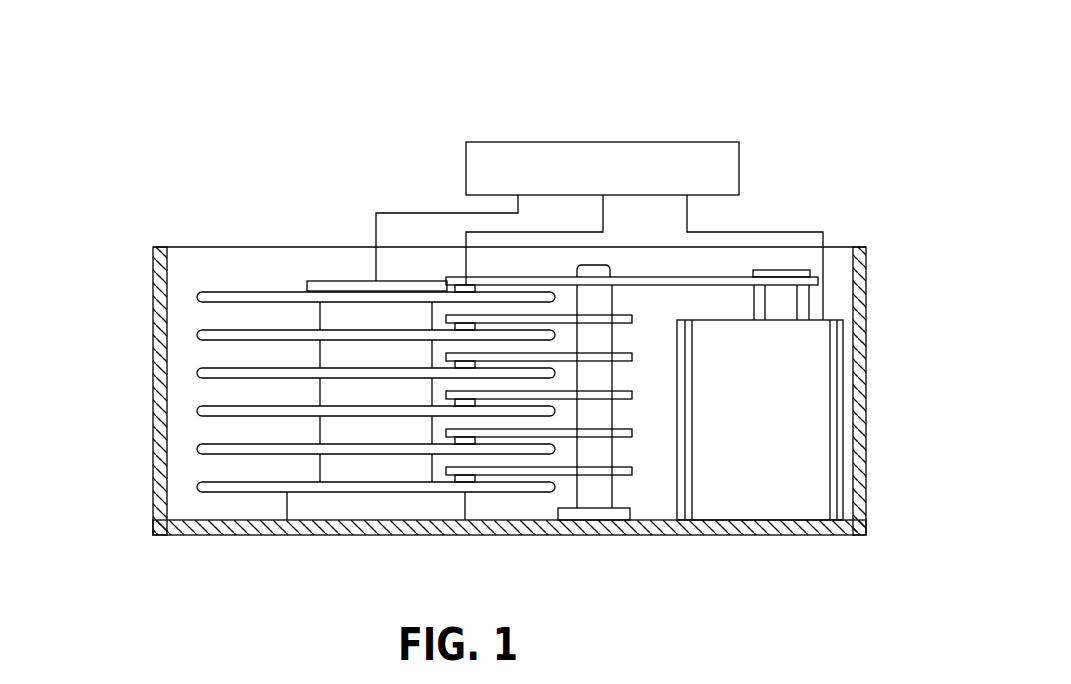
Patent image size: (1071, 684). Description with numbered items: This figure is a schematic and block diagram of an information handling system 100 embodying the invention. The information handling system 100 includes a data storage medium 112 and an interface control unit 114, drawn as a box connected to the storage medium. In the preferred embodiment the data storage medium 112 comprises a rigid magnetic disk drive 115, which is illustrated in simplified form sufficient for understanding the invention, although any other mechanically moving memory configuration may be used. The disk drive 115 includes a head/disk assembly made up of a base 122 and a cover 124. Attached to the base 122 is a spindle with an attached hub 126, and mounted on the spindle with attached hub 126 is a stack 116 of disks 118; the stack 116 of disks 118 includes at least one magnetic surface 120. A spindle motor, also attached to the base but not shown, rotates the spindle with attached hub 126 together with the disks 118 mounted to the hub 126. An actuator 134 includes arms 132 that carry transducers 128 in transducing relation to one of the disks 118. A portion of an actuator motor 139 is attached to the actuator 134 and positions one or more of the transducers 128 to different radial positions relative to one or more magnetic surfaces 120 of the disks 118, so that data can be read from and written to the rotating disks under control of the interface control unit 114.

The information handling system 100 is at (708, 104).
The data storage medium 112 is at (343, 212).
The interface control unit 114 is at (739, 167).
The rigid magnetic disk drive 115 is at (866, 496).
The stack of disks 116 is at (255, 262).
The disks 118 is at (198, 336).
The magnetic surface 120 is at (217, 292).
The base 122 is at (152, 300).
The cover 124 is at (185, 247).
The spindle with attached hub 126 is at (380, 470).
The transducers 128 is at (450, 286).
The arms 132 is at (632, 322).
The actuator 134 is at (593, 497).
The actuator motor 139 is at (812, 303).